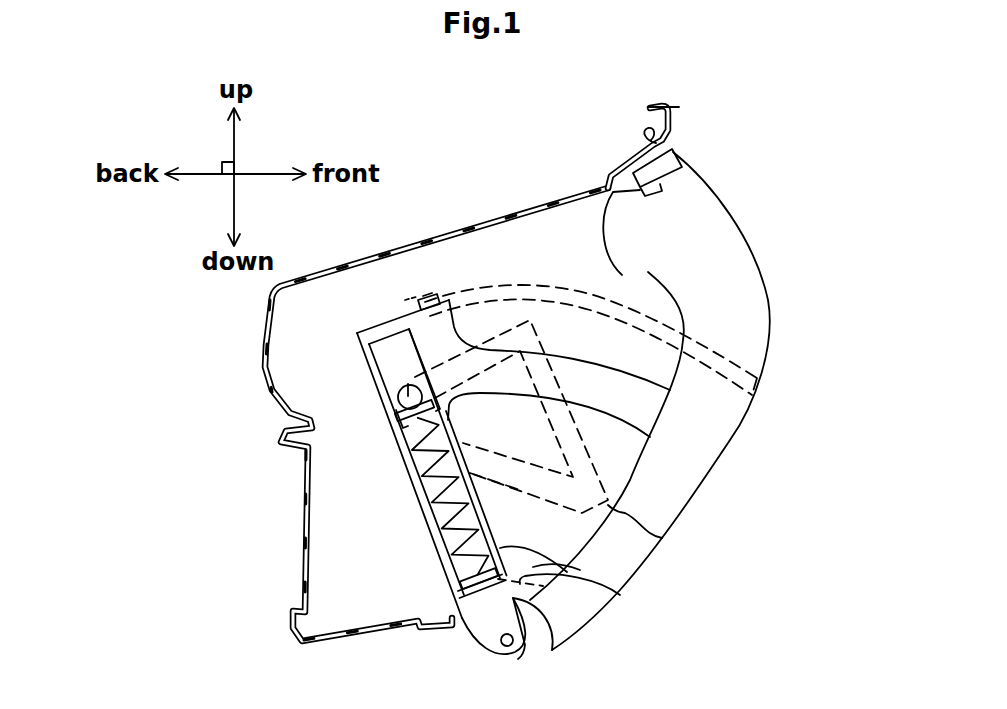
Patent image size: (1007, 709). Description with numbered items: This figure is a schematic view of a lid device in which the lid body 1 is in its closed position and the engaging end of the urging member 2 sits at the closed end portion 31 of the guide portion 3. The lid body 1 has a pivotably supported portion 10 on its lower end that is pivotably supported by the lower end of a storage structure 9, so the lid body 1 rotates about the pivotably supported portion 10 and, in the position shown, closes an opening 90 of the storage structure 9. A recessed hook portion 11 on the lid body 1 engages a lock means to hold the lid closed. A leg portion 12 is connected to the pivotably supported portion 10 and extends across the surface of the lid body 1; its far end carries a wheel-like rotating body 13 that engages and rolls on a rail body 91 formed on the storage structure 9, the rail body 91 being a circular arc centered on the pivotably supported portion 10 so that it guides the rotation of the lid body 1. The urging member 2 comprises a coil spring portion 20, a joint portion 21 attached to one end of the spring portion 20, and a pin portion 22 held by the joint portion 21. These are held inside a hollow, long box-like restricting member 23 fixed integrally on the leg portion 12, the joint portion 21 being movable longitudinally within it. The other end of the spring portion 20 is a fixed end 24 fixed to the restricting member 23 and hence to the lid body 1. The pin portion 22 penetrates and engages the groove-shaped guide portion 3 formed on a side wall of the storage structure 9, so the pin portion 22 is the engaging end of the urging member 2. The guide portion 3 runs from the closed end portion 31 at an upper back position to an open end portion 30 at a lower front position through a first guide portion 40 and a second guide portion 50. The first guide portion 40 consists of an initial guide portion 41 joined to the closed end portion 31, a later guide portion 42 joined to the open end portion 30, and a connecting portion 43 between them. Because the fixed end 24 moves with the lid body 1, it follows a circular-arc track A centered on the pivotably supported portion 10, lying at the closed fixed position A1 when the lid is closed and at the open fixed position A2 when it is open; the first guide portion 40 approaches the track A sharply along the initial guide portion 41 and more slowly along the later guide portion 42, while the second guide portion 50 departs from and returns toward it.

The lid body 1 is at (772, 198).
The urging member 2 is at (400, 497).
The guide portion 3 is at (614, 462).
The storage structure 9 is at (486, 222).
The pivotably supported portion 10 is at (502, 653).
The hook portion 11 is at (684, 164).
The leg portion 12 is at (430, 537).
The rotating body 13 is at (421, 292).
The spring portion 20 is at (452, 515).
The joint portion 21 is at (396, 411).
The pin portion 22 is at (405, 385).
The restricting member 23 is at (388, 359).
The fixed end 24 is at (423, 573).
The open end portion 30 is at (662, 538).
The closed end portion 31 is at (398, 397).
The first guide portion 40 is at (585, 512).
The initial guide portion 41 is at (446, 424).
The later guide portion 42 is at (503, 487).
The connecting portion 43 is at (463, 443).
The second guide portion 50 is at (570, 386).
The opening 90 is at (605, 287).
The rail body 91 is at (526, 287).
The moving track A is at (620, 595).
The closed fixed position A1 is at (453, 573).
The open fixed position A2 is at (540, 580).